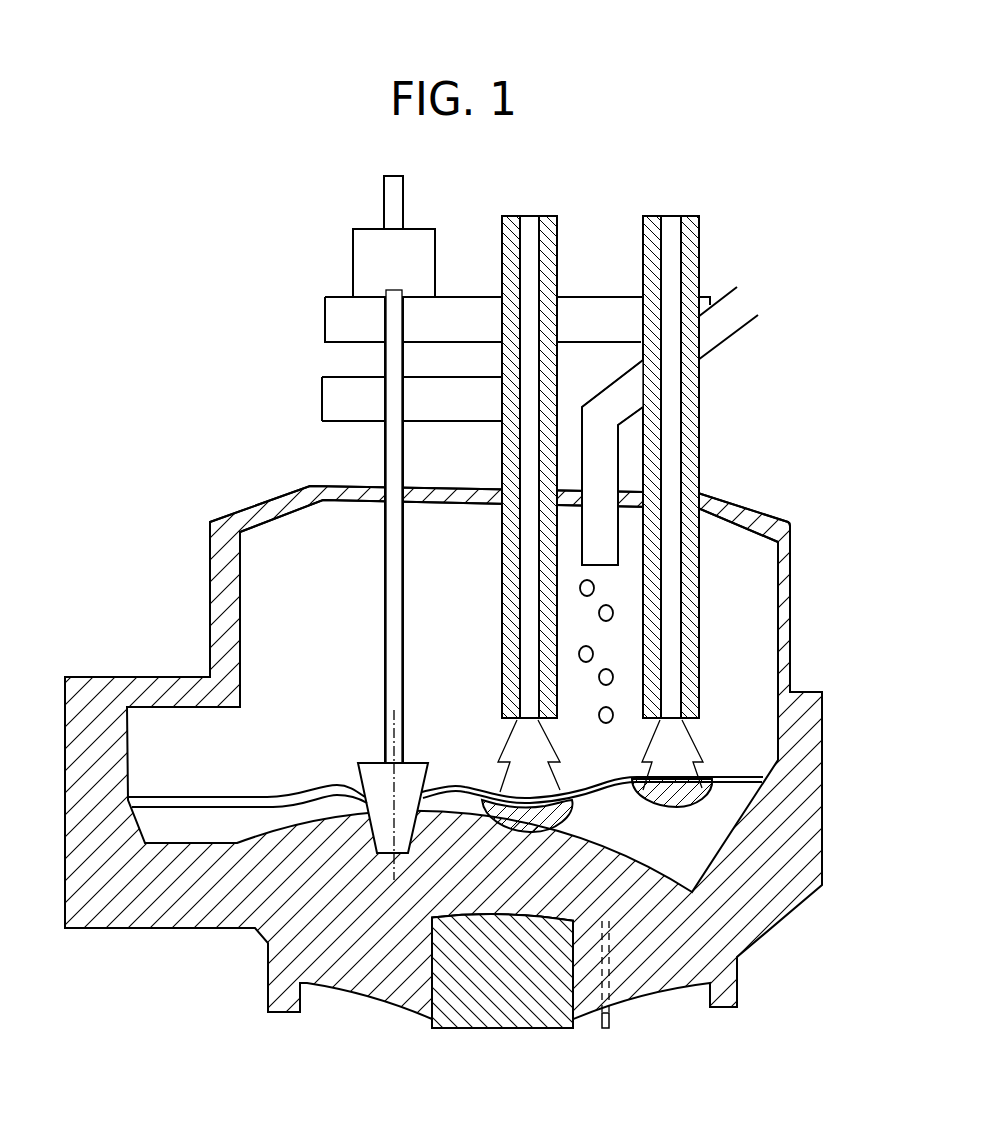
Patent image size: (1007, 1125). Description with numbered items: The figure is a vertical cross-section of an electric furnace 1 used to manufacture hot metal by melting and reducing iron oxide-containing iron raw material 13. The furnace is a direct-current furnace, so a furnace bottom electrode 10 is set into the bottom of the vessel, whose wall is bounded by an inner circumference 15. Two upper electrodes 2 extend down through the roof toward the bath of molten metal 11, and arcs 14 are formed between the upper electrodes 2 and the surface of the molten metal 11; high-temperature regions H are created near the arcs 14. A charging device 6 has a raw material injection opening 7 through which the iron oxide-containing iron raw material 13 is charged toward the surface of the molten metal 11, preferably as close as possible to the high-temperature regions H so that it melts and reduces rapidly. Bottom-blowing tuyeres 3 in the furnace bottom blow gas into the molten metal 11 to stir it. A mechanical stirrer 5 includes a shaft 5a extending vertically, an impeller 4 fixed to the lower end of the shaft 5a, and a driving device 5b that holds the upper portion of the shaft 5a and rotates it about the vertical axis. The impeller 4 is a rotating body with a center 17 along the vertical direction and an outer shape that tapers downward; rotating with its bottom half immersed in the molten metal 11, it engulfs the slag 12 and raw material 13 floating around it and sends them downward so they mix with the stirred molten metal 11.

The electric furnace 1 is at (237, 498).
The upper electrode 2 is at (502, 452).
The bottom-blowing tuyere 3 is at (613, 987).
The impeller 4 is at (370, 770).
The mechanical stirrer 5 is at (376, 473).
The shaft 5a is at (407, 600).
The driving device 5b is at (428, 263).
The charging device 6 is at (728, 327).
The raw material injection opening 7 is at (603, 566).
The furnace bottom electrode 10 is at (488, 1008).
The molten metal 11 is at (577, 877).
The slag 12 is at (245, 805).
The iron oxide-containing iron raw material 13 is at (613, 613).
The arc 14 is at (697, 742).
The inner circumference 15 is at (242, 598).
The center of impeller 17 is at (392, 827).
The high-temperature region H is at (503, 830).